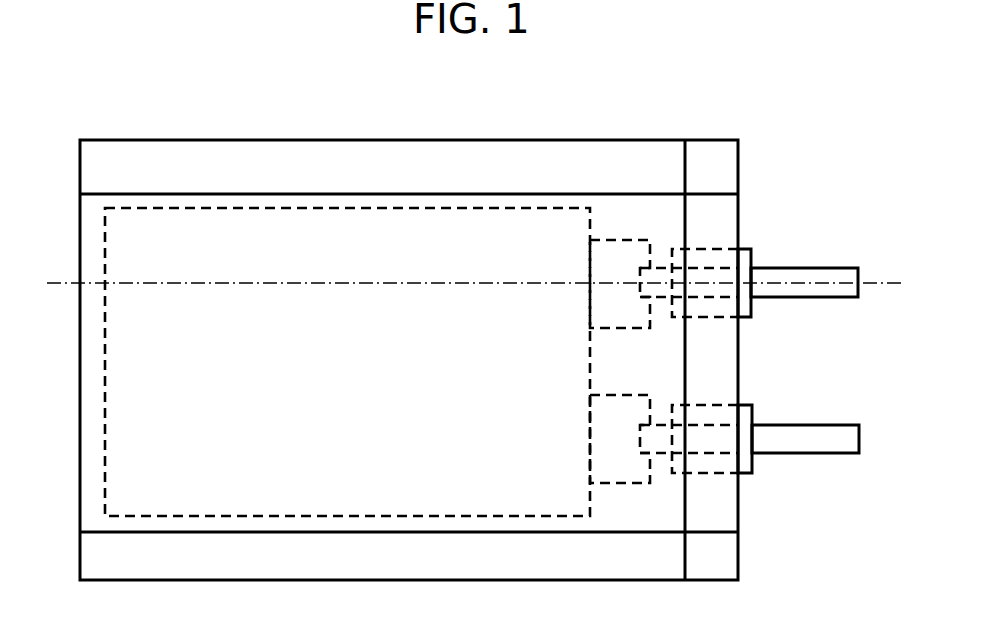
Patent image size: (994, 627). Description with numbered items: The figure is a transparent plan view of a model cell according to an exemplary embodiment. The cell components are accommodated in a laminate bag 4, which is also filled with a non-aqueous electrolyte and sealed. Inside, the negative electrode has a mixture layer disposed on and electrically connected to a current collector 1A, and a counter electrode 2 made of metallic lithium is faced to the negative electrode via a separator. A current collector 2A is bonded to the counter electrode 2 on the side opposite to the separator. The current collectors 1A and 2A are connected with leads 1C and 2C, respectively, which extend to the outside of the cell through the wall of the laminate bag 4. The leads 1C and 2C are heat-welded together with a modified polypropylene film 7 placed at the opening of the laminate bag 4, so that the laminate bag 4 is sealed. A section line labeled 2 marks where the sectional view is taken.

The laminate bag 4 is at (212, 165).
The current collector 2A is at (610, 252).
The current collector 1A is at (610, 473).
The modified polypropylene film 7 is at (746, 255).
The lead 2C is at (837, 272).
The lead 1C is at (837, 443).
The counter electrode 2 is at (46, 283).